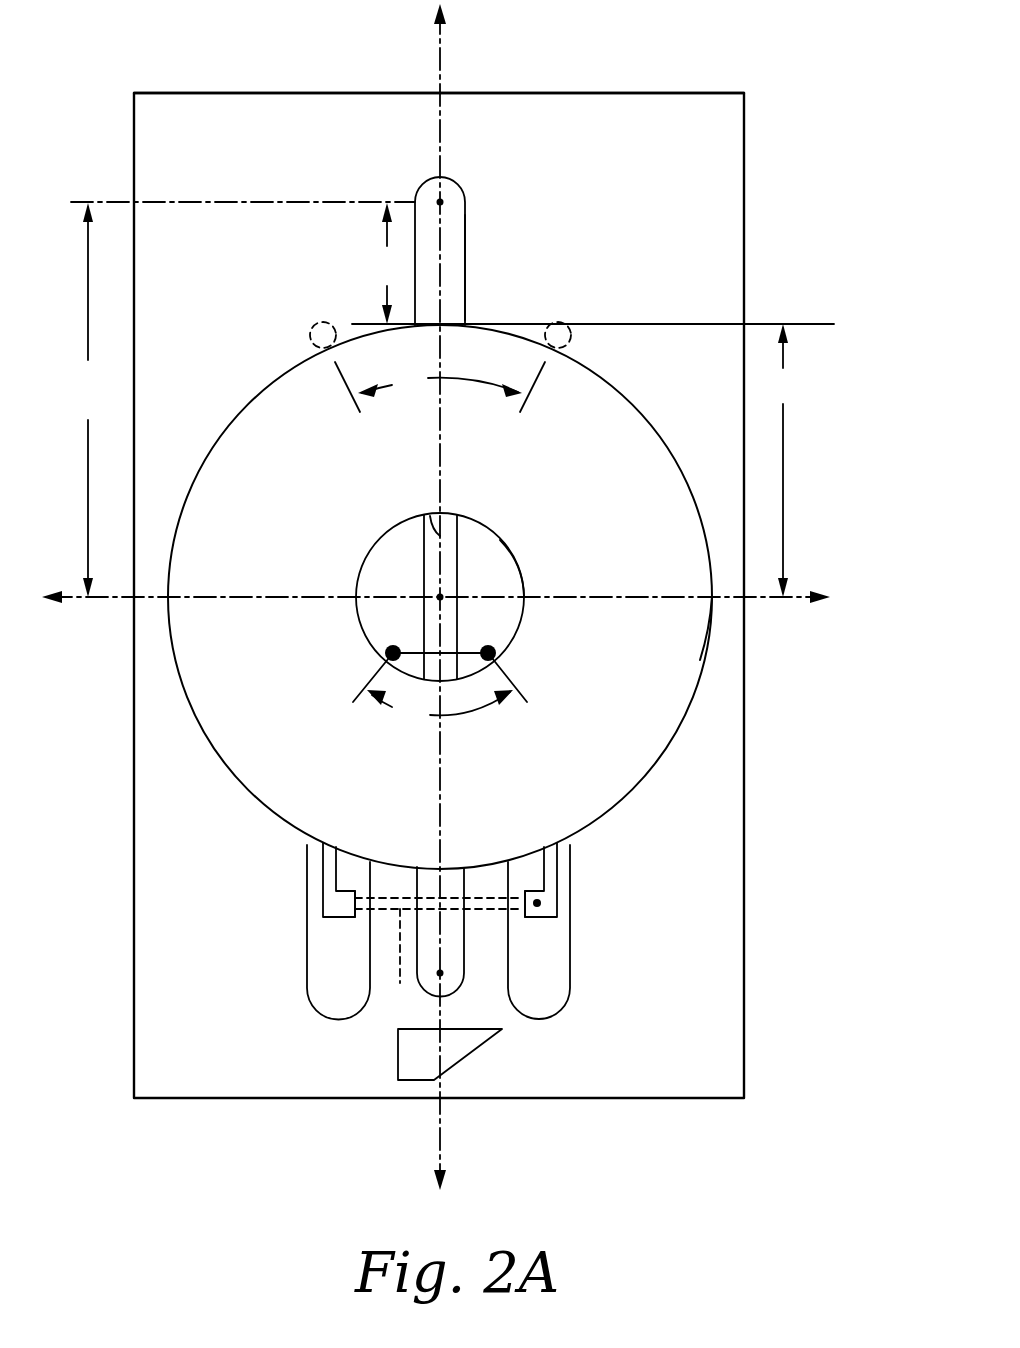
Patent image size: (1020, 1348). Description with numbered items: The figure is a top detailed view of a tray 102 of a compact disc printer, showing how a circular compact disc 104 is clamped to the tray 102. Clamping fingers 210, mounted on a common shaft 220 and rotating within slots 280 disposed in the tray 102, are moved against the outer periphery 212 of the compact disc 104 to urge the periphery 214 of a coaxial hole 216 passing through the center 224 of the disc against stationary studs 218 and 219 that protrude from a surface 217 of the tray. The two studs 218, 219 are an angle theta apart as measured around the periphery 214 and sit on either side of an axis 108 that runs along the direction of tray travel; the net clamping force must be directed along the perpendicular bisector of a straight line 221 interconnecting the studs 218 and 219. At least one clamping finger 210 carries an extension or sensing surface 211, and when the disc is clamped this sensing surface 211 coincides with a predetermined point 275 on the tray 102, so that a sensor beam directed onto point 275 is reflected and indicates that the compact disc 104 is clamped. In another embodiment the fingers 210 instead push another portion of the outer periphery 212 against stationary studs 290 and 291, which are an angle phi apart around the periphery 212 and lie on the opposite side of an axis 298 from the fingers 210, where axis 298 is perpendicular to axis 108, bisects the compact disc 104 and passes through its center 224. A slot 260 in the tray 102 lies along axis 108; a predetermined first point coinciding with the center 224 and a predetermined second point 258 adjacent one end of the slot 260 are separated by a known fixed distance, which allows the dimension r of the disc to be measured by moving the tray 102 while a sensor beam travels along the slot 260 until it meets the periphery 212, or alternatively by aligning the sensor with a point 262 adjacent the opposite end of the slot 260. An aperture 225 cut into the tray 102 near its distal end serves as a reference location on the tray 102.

The tray 102 is at (662, 204).
The compact disc 104 is at (330, 459).
The axis 108 is at (441, 60).
The clamping fingers 210 is at (328, 874).
The extension or sensing surface 211 is at (338, 905).
The outer periphery 212 is at (712, 632).
The periphery of hole 214 is at (522, 572).
The coaxial hole 216 is at (390, 556).
The surface of tray 217 is at (718, 293).
The stud 218 is at (388, 652).
The stud 219 is at (493, 652).
The shaft 220 is at (394, 961).
The straight line 221 is at (462, 652).
The center 224 is at (442, 596).
The aperture 225 is at (406, 1046).
The predetermined second point 258 is at (443, 200).
The slot 260 is at (457, 225).
The point 262 is at (443, 973).
The predetermined point 275 is at (540, 905).
The slots 280 is at (322, 988).
The stud 290 is at (315, 325).
The stud 291 is at (568, 344).
The axis 298 is at (790, 596).